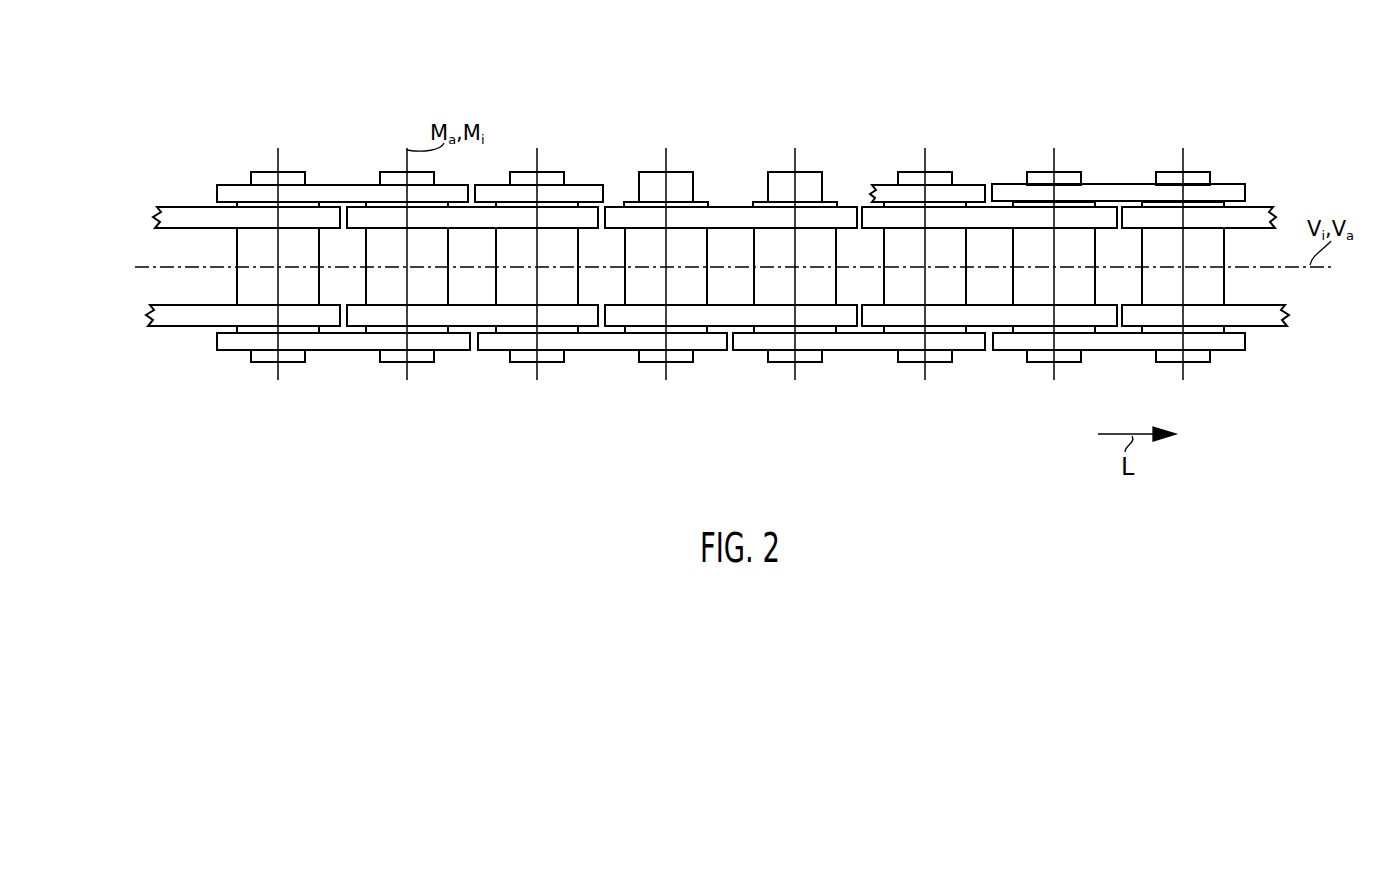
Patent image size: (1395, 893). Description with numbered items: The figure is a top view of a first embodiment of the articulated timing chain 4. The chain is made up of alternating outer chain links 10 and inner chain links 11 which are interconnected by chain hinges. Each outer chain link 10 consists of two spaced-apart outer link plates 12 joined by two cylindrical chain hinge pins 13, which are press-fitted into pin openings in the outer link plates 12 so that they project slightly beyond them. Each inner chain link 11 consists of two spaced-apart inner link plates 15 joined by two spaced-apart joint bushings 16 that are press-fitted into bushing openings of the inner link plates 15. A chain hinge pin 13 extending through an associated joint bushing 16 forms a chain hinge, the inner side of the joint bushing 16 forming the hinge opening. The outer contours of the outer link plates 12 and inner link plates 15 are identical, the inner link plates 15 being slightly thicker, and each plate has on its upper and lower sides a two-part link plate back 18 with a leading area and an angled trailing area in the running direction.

The timing chain 4 is at (203, 123).
The outer chain link 10 is at (1113, 172).
The inner chain link 11 is at (725, 186).
The outer link plate 12 is at (218, 194).
The chain hinge pin 13 is at (292, 178).
The inner link plate 15 is at (188, 317).
The joint bushing 16 is at (630, 200).
The link plate back 18 is at (332, 193).